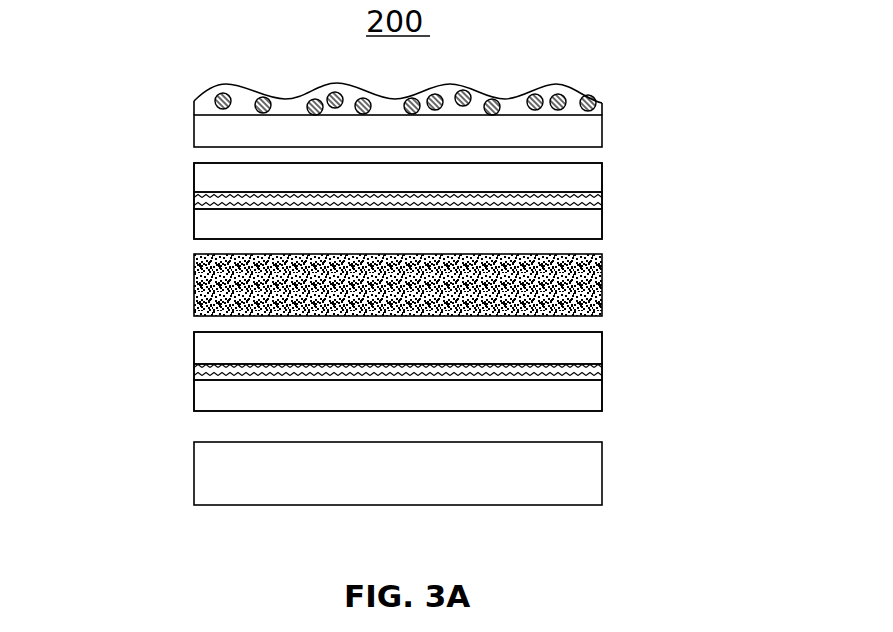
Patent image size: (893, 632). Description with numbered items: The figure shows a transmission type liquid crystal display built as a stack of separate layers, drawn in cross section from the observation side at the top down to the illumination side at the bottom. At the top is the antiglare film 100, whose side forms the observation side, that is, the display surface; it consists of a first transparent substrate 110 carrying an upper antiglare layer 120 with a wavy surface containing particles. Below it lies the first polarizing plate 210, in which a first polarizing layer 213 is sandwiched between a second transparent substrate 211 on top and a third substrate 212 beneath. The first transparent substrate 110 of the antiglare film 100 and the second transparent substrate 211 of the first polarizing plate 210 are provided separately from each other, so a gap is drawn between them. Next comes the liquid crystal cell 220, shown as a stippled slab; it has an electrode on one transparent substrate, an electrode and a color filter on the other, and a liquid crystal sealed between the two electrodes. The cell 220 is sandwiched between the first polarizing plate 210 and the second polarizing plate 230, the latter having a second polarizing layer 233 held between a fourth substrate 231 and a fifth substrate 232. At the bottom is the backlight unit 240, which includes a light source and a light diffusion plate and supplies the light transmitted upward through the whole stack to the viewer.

The antiglare film 100 is at (385, 108).
The first transparent substrate 110 is at (208, 127).
The lens layer with diffusion particles 120 is at (199, 97).
The first polarizing plate 210 is at (365, 208).
The second transparent substrate 211 is at (208, 176).
The third substrate 212 is at (218, 230).
The first polarizing layer 213 is at (199, 199).
The liquid crystal cell 220 is at (577, 287).
The second polarizing plate 230 is at (366, 376).
The fourth substrate 231 is at (210, 343).
The fifth substrate 232 is at (218, 399).
The second polarizing layer 233 is at (205, 374).
The backlight unit 240 is at (582, 479).